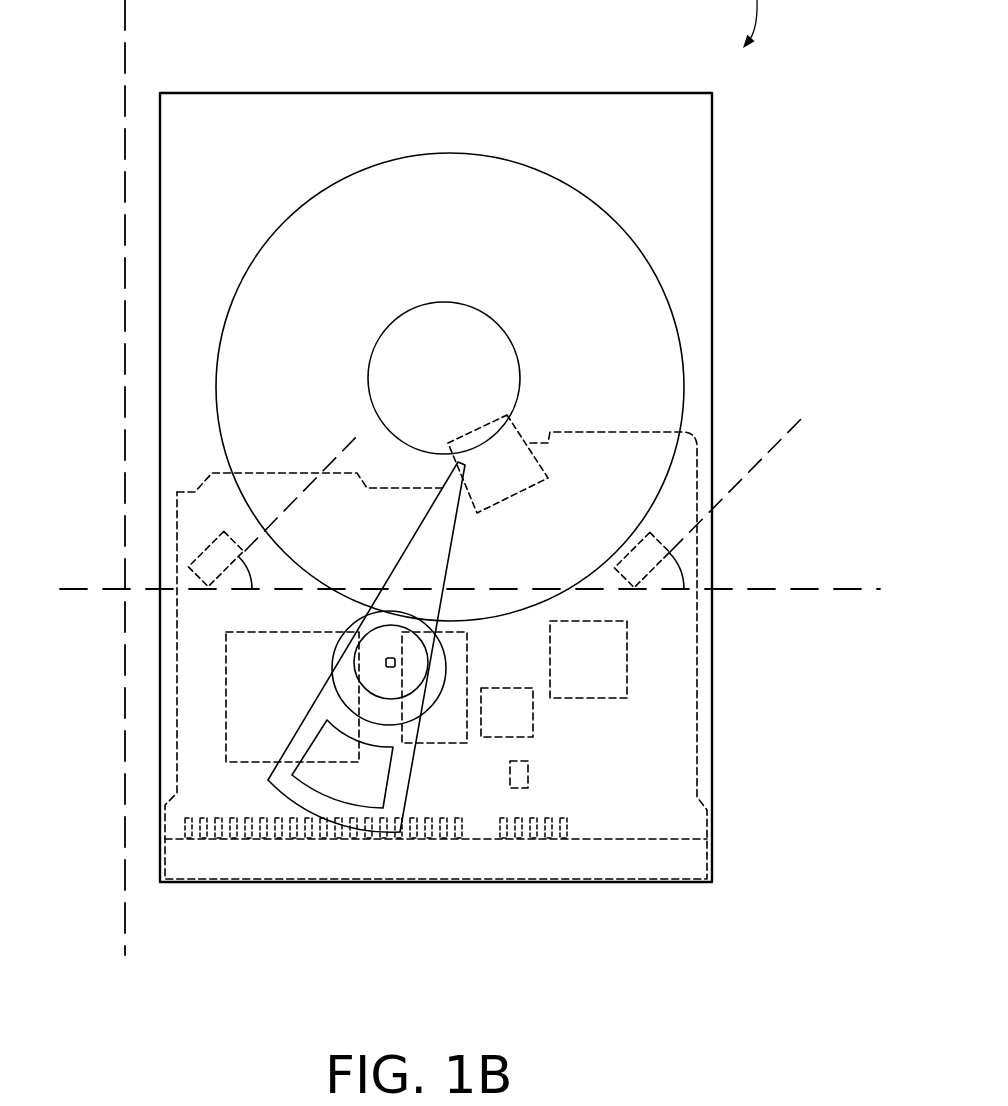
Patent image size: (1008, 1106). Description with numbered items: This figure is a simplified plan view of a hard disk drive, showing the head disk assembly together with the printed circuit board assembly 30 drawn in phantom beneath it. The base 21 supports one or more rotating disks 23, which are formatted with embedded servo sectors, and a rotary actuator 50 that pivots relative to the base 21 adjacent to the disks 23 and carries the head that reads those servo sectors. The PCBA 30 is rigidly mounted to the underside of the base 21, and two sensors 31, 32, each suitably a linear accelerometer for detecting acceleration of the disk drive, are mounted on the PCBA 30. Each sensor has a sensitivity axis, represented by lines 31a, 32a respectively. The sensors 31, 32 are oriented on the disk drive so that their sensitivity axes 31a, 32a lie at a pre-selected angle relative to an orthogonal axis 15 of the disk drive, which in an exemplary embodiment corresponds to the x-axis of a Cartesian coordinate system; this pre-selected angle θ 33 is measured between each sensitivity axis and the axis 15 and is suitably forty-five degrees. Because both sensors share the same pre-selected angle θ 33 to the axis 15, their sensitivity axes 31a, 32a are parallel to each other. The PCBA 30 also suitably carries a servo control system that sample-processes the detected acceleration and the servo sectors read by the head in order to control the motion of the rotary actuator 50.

The orthogonal axis 15 is at (850, 585).
The base 21 is at (713, 248).
The rotating disk 23 is at (608, 226).
The Printed Circuit Board Assembly 30 is at (697, 657).
The sensor 31 is at (635, 548).
The sensitivity axis 31a is at (745, 485).
The sensor 32 is at (218, 548).
The sensitivity axis 32a is at (293, 507).
The pre-selected angle θ 33 is at (225, 582).
The rotary actuator 50 is at (346, 617).